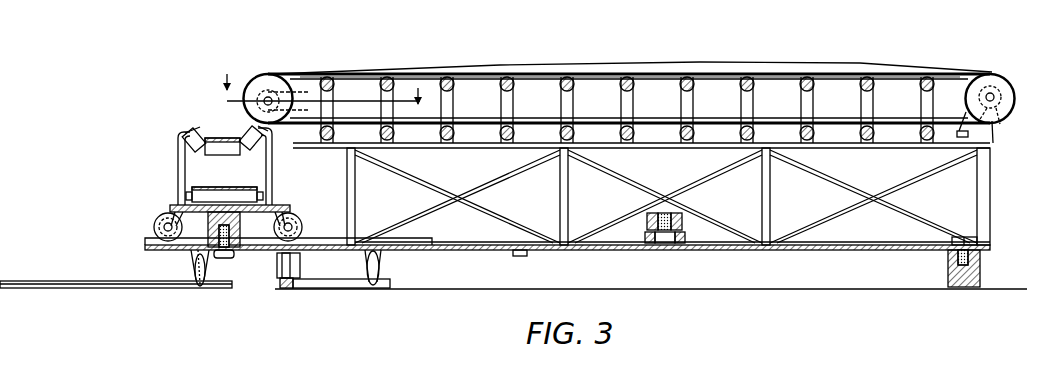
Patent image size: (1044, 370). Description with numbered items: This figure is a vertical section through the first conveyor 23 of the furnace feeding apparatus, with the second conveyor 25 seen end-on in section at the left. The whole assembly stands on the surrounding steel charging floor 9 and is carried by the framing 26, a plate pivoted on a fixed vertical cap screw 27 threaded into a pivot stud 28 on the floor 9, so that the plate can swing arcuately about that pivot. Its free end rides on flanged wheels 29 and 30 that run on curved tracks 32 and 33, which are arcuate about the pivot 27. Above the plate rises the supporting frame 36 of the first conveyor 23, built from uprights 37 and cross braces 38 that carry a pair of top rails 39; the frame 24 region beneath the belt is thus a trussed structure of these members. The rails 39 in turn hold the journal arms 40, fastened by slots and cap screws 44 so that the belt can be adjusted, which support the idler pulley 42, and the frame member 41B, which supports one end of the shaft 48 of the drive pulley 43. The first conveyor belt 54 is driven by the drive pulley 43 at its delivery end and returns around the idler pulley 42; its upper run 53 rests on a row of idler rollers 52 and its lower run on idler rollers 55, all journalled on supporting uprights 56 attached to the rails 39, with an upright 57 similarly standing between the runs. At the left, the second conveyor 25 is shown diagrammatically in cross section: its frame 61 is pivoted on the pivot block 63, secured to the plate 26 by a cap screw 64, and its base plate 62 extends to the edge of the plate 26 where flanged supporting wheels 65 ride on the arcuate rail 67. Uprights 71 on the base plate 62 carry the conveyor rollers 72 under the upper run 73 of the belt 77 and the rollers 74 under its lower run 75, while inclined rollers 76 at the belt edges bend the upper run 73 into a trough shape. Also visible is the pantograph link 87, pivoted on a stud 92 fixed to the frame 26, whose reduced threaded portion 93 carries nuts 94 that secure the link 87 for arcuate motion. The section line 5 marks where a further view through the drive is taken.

The section line 5- 5 is at (327, 83).
The charging floor 9 is at (441, 292).
The first conveyor 23 is at (624, 81).
The conveyor frame 24 is at (586, 211).
The second conveyor 25 is at (172, 137).
The framing 26 is at (745, 250).
The cap screw 27 is at (952, 240).
The pivot stud 28 is at (948, 271).
The flanged wheels 29 is at (288, 289).
The flanged wheel 30 is at (200, 284).
The curved track 32 is at (327, 289).
The curved track 33 is at (92, 288).
The supporting frame 36 is at (992, 168).
The uprights 37 is at (356, 193).
The cross braces 38 is at (470, 184).
The top rails 39 is at (850, 147).
The journal arms 40 is at (985, 134).
The frame member 41B is at (307, 96).
The idler pulley 42 is at (990, 82).
The drive pulley 43 is at (265, 88).
The cap screws 44 is at (966, 112).
The shaft 48 is at (266, 100).
The idler rollers 52 is at (642, 51).
The upper run 53 is at (678, 63).
The first conveyor belt 54 is at (590, 73).
The idler rollers 55 is at (680, 121).
The supporting uprights 56 is at (623, 112).
The roller stand 57 is at (527, 120).
The supporting frame 61 is at (272, 195).
The base plate 62 is at (177, 200).
The pivot block 63 is at (240, 222).
The cap screw 64 is at (228, 254).
The flanged supporting wheels 65 is at (156, 222).
The arcuate rail 67 is at (146, 240).
The uprights 71 is at (178, 168).
The conveyor rollers 72 is at (215, 146).
The upper run 73 is at (222, 138).
The rollers 74 is at (216, 195).
The lower run 75 is at (258, 190).
The inclined rollers 76 is at (193, 145).
The belt 77 is at (207, 136).
The link 87 is at (645, 240).
The stud 92 is at (660, 243).
The reduced threaded portion 93 is at (665, 213).
The nuts 94 is at (682, 222).